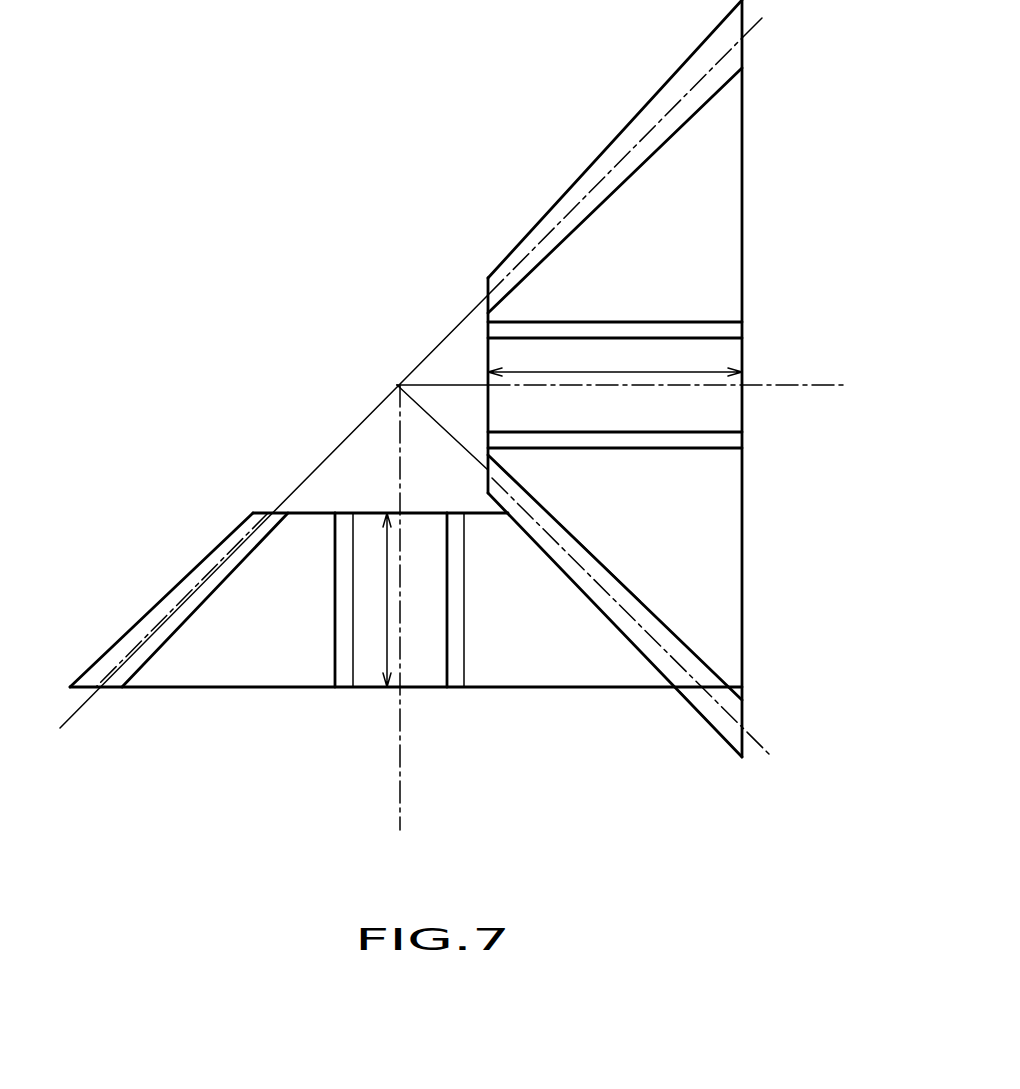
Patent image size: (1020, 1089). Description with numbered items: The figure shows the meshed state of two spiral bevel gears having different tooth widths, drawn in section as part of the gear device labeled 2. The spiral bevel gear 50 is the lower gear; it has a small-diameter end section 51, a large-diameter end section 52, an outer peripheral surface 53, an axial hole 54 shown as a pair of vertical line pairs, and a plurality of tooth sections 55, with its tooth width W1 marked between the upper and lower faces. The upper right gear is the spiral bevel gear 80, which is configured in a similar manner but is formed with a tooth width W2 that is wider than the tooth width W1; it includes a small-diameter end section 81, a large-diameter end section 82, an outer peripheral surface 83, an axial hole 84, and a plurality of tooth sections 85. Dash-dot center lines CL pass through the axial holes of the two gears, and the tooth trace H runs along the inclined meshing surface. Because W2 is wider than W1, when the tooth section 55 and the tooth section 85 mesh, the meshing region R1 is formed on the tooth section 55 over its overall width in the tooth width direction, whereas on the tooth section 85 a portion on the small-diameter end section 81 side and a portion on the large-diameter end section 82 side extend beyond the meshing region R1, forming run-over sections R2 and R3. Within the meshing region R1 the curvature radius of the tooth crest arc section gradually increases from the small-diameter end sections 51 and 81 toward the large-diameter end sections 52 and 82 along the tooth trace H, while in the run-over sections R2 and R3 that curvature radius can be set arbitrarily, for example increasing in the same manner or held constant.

The light guide plate 2 is at (248, 372).
The spiral bevel gear 50 is at (402, 624).
The small-diameter end section 51 is at (313, 513).
The large-diameter end section 52 is at (280, 689).
The outer peripheral surface 53 is at (207, 597).
The axial hole 54 is at (428, 673).
The tooth section 55 is at (140, 613).
The spiral bevel gear 80 is at (614, 378).
The small-diameter end section 81 is at (487, 317).
The large-diameter end section 82 is at (743, 181).
The outer peripheral surface 83 is at (643, 160).
The axial hole 84 is at (743, 349).
The tooth section 85 is at (557, 200).
The meshing region R1 is at (597, 563).
The run-over section R2 is at (520, 495).
The run-over section R3 is at (717, 713).
The tooth width W1 is at (402, 600).
The tooth width W2 is at (615, 359).
The center line CL is at (773, 380).
The tooth trace H is at (747, 700).